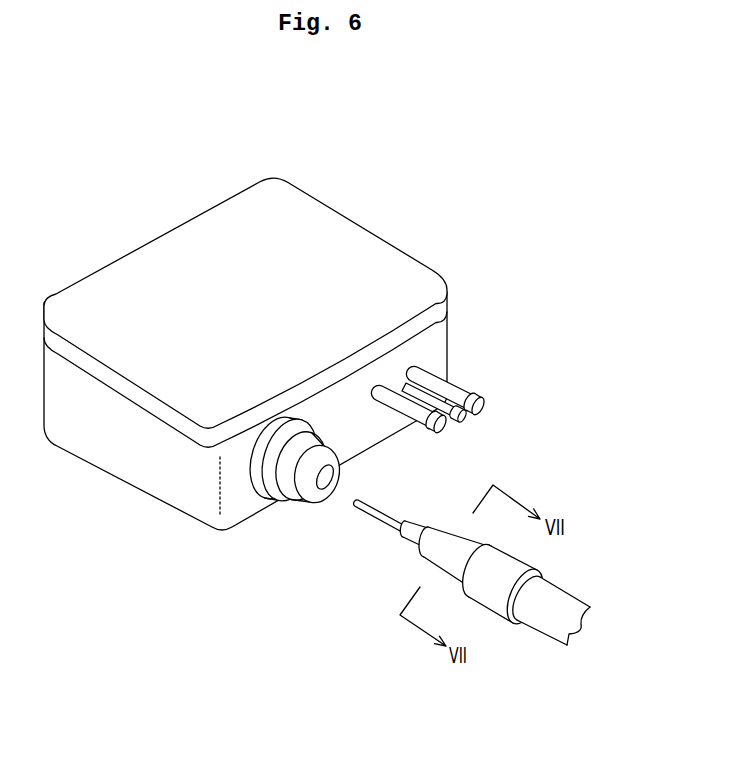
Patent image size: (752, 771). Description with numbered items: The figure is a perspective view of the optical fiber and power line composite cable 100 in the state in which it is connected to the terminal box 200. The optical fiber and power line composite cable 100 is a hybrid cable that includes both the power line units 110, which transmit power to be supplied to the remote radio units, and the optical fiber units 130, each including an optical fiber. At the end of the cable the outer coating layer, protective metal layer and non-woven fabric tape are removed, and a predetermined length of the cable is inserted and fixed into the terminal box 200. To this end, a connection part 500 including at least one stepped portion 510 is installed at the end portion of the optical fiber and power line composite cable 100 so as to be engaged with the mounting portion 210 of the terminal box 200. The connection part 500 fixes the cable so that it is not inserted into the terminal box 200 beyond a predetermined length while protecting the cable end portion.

The terminal box 200 is at (332, 242).
The mounting portion 210 is at (272, 492).
The power line unit 110 is at (374, 511).
The optical fiber unit 130 is at (398, 520).
The stepped portion 510 is at (438, 556).
The connection part 500 is at (497, 607).
The optical fiber and power line composite cable 100 is at (548, 623).